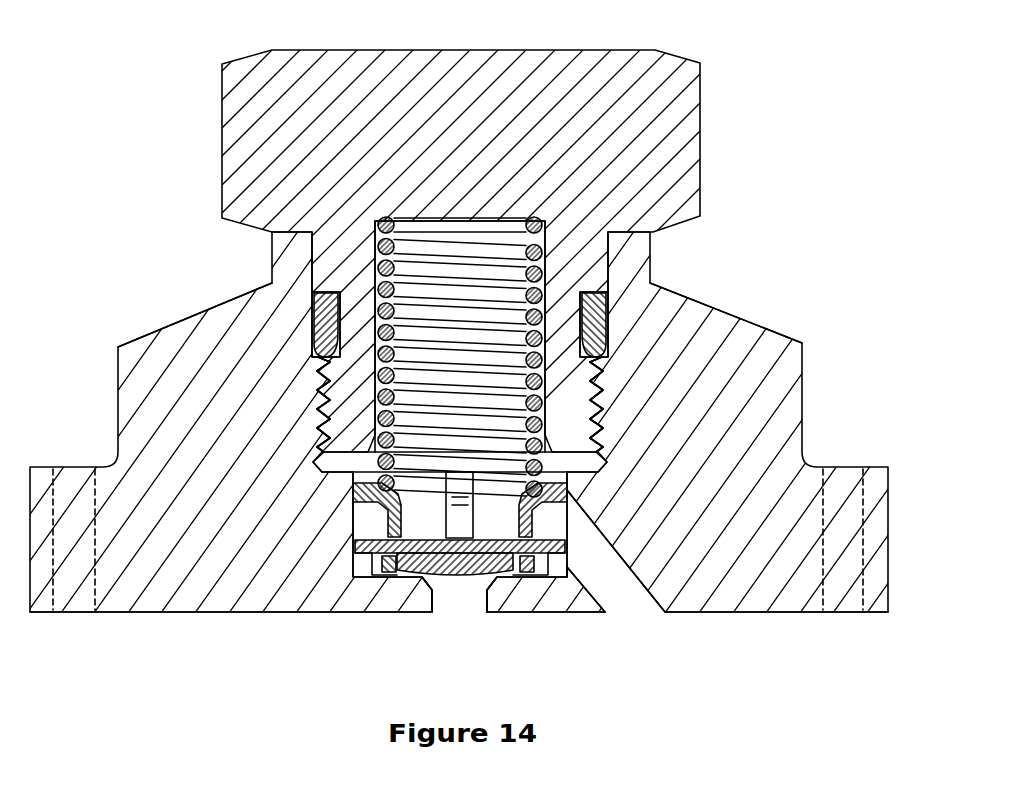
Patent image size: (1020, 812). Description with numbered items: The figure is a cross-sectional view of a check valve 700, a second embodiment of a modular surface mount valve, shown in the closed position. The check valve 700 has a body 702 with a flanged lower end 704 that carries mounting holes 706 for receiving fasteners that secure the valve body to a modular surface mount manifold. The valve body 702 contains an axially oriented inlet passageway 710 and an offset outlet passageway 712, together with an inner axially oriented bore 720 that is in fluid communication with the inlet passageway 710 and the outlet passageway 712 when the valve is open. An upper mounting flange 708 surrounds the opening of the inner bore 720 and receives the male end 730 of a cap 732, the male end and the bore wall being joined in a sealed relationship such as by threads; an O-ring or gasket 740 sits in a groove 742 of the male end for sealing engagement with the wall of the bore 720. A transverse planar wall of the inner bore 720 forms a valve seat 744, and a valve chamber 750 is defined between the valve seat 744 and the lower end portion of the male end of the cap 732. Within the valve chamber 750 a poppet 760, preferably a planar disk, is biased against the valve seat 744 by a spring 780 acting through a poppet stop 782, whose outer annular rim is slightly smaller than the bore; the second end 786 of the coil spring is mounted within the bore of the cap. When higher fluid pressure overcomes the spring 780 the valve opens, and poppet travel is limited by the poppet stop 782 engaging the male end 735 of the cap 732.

The check valve 700 is at (150, 84).
The body 702 is at (763, 352).
The flanged lower end 704 is at (893, 478).
The mounting holes 706 is at (76, 487).
The upper mounting flange 708 is at (603, 357).
The inlet passageway 710 is at (448, 600).
The outlet passageway 712 is at (618, 583).
The inner bore 720 is at (548, 515).
The male end 730 is at (582, 412).
The cap 732 is at (670, 120).
The male end 735 is at (320, 463).
The O-ring or gasket 740 is at (310, 293).
The groove 742 is at (313, 325).
The valve seat 744 is at (367, 572).
The valve chamber 750 is at (361, 512).
The poppet 760 is at (510, 562).
The spring 780 is at (547, 222).
The poppet stop 782 is at (578, 487).
The second end 786 is at (387, 227).